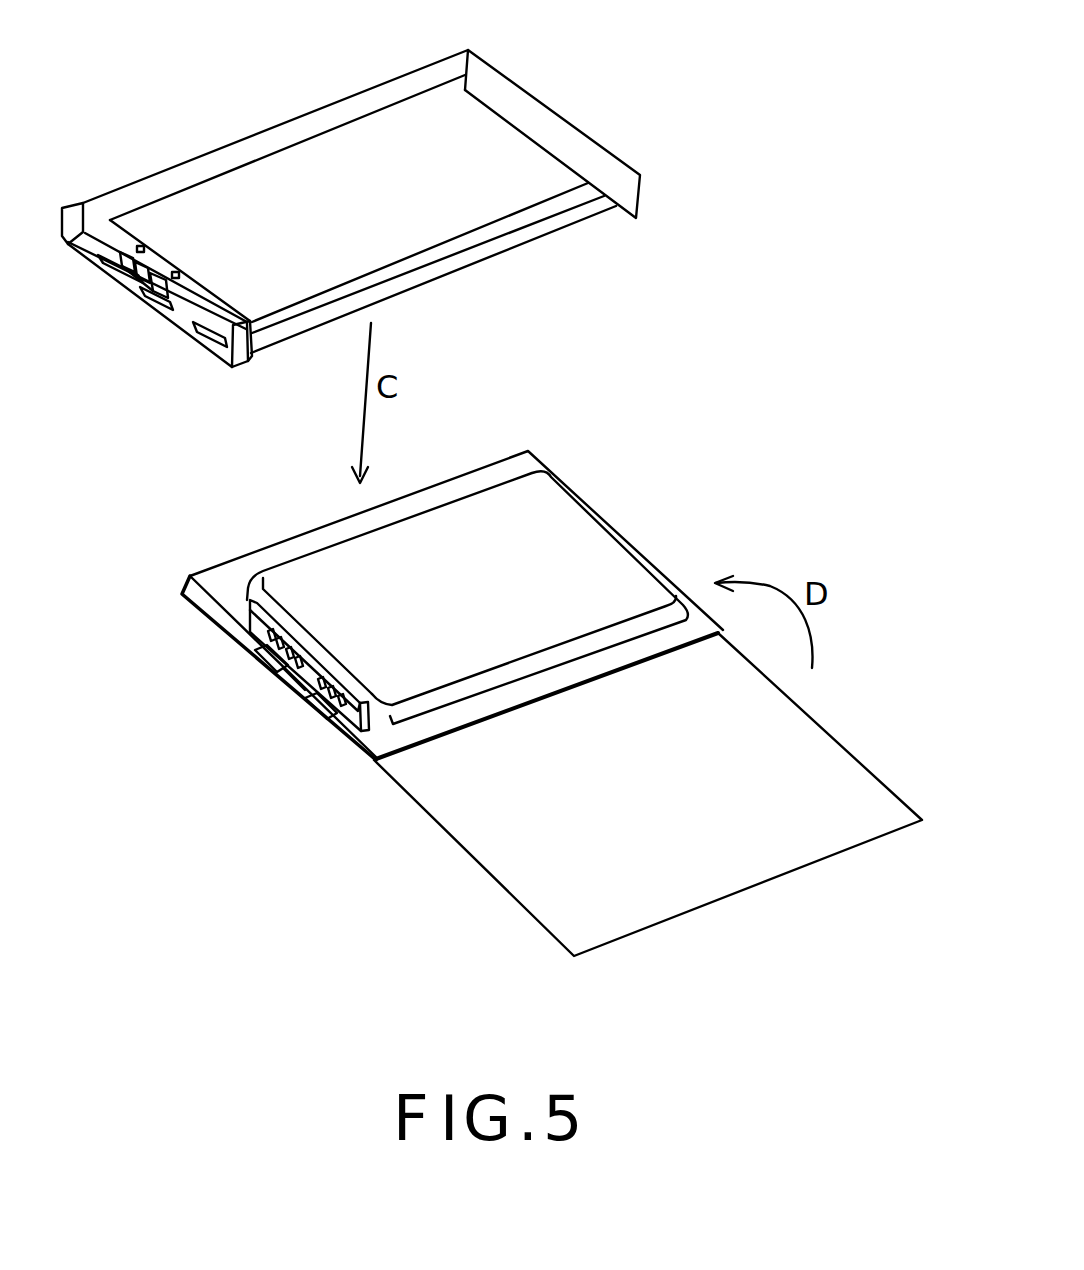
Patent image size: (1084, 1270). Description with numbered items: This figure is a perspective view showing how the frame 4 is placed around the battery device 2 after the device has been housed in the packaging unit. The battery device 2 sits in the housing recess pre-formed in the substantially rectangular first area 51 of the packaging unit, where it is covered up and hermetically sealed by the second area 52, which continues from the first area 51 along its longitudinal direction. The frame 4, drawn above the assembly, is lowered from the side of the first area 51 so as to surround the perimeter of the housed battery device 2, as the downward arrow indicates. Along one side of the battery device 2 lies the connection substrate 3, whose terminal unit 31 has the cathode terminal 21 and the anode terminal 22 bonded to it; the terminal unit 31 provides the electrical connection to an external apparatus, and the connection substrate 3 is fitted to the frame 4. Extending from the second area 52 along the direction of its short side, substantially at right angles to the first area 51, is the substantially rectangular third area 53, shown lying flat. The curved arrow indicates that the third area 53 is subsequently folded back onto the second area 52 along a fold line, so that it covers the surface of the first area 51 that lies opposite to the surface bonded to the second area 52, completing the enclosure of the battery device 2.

The frame 4 is at (330, 121).
The battery device 2 is at (360, 569).
The connection substrate 3 is at (350, 717).
The cathode terminal 21 is at (313, 707).
The anode terminal 22 is at (260, 658).
The terminal unit 31 is at (278, 682).
The first area 51 is at (560, 522).
The second area 52 is at (203, 610).
The third area 53 is at (790, 745).